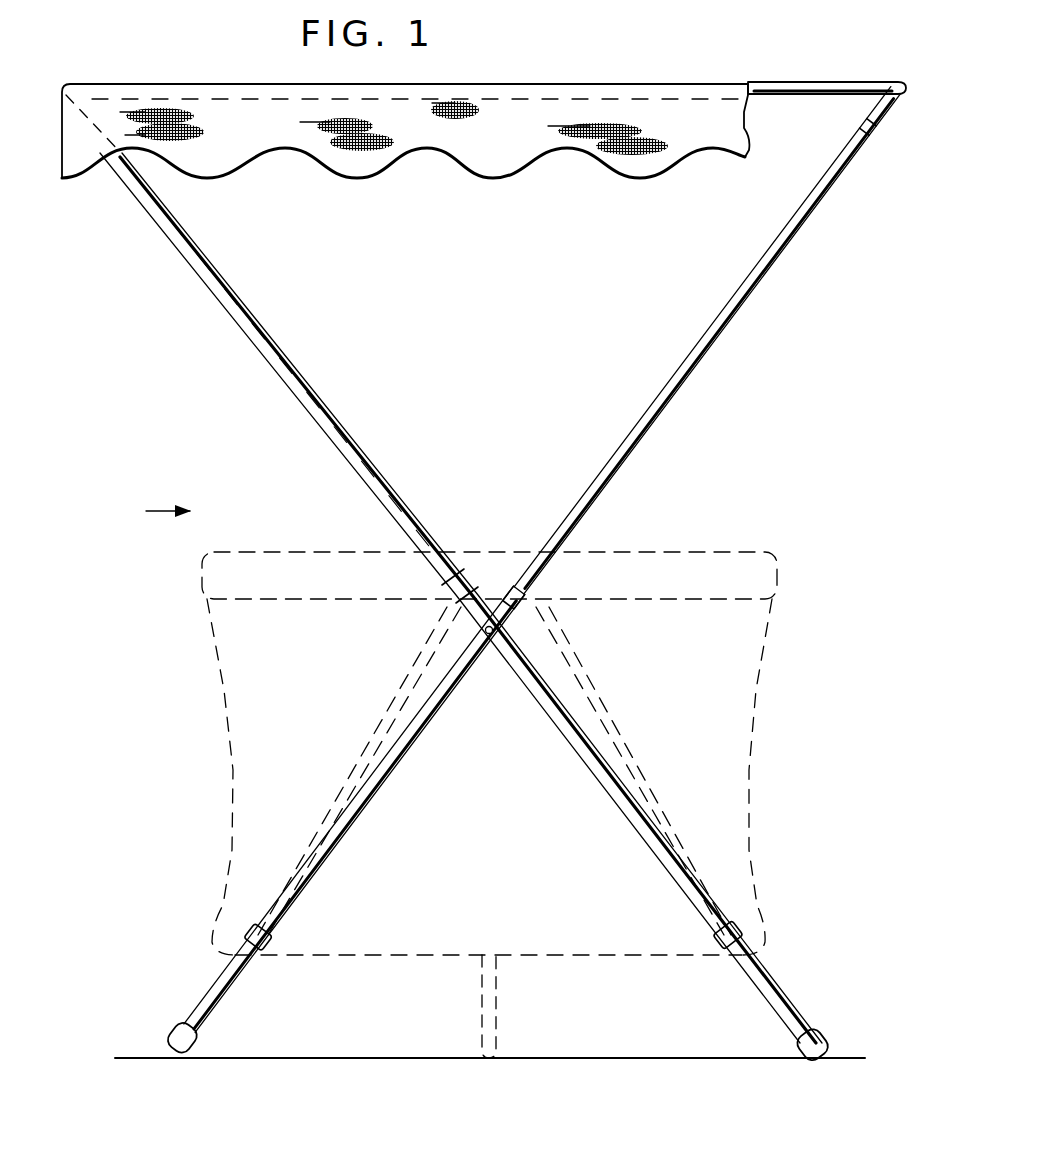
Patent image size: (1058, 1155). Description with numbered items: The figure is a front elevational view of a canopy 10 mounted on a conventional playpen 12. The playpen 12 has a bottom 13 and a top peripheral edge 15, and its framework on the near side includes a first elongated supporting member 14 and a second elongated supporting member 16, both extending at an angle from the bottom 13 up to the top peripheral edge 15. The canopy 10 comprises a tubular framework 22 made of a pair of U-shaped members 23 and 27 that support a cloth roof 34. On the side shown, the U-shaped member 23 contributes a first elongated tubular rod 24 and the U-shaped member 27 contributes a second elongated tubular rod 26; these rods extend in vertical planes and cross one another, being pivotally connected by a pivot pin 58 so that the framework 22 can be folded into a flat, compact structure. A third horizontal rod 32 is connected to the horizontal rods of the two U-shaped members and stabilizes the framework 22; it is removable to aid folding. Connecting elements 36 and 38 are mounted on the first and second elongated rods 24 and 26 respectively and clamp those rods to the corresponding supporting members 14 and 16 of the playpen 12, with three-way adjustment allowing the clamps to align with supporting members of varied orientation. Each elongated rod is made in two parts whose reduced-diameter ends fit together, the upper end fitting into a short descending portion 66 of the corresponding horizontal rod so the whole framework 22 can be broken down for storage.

The canopy 10 is at (836, 67).
The playpen 12 is at (210, 672).
The bottom 13 is at (440, 955).
The first elongated supporting member 14 is at (575, 670).
The top peripheral edge 15 is at (648, 553).
The second elongated supporting member 16 is at (400, 665).
The tubular framework 22 is at (758, 337).
The U-shaped member 23 is at (810, 251).
The first elongated tubular rod 24 is at (690, 377).
The second tubular elongated rod 26 is at (226, 300).
The U-shaped member 27 is at (140, 210).
The third horizontal rod 32 is at (769, 84).
The cloth roof 34 is at (79, 166).
The connecting element 36 is at (744, 930).
The connecting element 38 is at (240, 927).
The pivot pin 58 is at (489, 640).
The short descending portion 66 is at (888, 106).